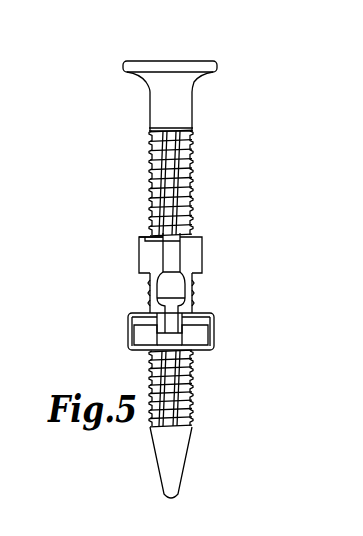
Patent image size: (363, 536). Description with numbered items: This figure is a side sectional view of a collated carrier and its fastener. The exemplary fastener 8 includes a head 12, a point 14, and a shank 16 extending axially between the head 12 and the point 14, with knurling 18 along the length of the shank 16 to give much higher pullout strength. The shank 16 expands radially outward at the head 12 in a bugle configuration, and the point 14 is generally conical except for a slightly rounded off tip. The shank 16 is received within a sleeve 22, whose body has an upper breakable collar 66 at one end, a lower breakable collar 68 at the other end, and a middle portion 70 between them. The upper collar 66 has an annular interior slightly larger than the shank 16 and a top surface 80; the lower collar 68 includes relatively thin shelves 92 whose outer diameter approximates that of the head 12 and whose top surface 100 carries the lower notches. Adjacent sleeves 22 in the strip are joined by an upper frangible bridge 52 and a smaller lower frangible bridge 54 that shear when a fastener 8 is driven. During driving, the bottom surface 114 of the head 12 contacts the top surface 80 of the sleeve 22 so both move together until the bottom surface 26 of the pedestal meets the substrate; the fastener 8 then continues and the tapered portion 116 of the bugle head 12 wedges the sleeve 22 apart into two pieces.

The fastener 8 is at (120, 130).
The head 12 is at (190, 60).
The point 14 is at (177, 462).
The shank 16 is at (158, 188).
The knurling 18 is at (196, 173).
The sleeve 22 is at (213, 267).
The bottom surface 26 is at (194, 380).
The upper frangible bridge 52 is at (175, 256).
The lower frangible bridge 54 is at (168, 332).
The upper breakable collar 66 is at (145, 256).
The lower breakable collar 68 is at (203, 334).
The middle portion 70 is at (163, 294).
The top surface 80 is at (200, 237).
The shelves 92 is at (138, 316).
The top surface 100 is at (205, 313).
The bottom surface 114 is at (200, 77).
The tapered portion 116 is at (155, 91).